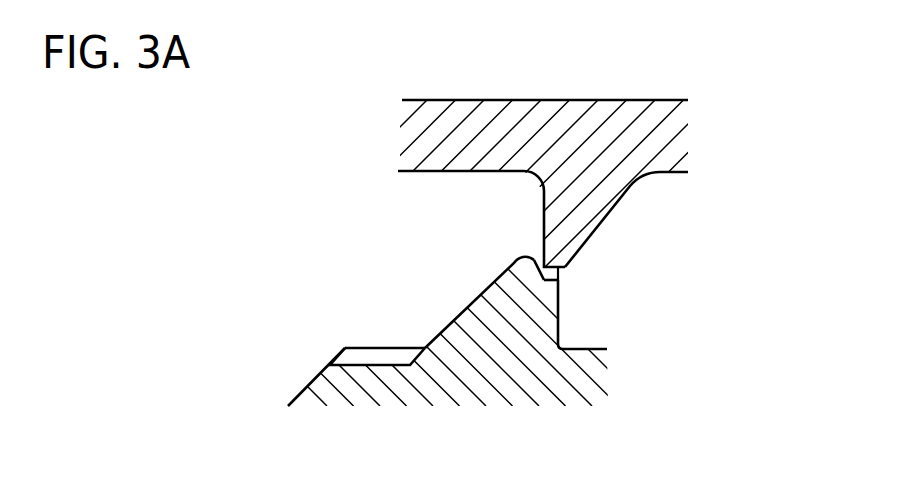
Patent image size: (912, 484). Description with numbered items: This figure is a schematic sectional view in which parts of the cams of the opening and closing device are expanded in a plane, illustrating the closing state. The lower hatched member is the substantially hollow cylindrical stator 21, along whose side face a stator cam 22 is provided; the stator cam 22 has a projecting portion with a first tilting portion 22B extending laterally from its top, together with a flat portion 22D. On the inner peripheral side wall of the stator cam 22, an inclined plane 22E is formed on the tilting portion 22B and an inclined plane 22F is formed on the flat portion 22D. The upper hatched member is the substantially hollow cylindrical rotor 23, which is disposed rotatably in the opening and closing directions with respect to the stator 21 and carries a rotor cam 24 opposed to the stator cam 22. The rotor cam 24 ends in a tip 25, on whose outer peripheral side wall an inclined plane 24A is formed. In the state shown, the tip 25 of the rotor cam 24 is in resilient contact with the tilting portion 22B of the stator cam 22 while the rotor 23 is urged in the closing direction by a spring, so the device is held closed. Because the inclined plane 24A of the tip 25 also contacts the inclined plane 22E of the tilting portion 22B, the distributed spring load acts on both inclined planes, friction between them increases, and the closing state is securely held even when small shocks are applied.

The stator 21 is at (472, 387).
The stator cam 22 is at (558, 323).
The first tilting portion 22B is at (558, 283).
The flat portion 22D is at (372, 347).
The inclined plane 22E is at (558, 290).
The inclined plane 22F is at (350, 360).
The rotor 23 is at (487, 113).
The rotor cam 24 is at (605, 200).
The inclined plane 24A is at (560, 270).
The tip 25 is at (542, 278).